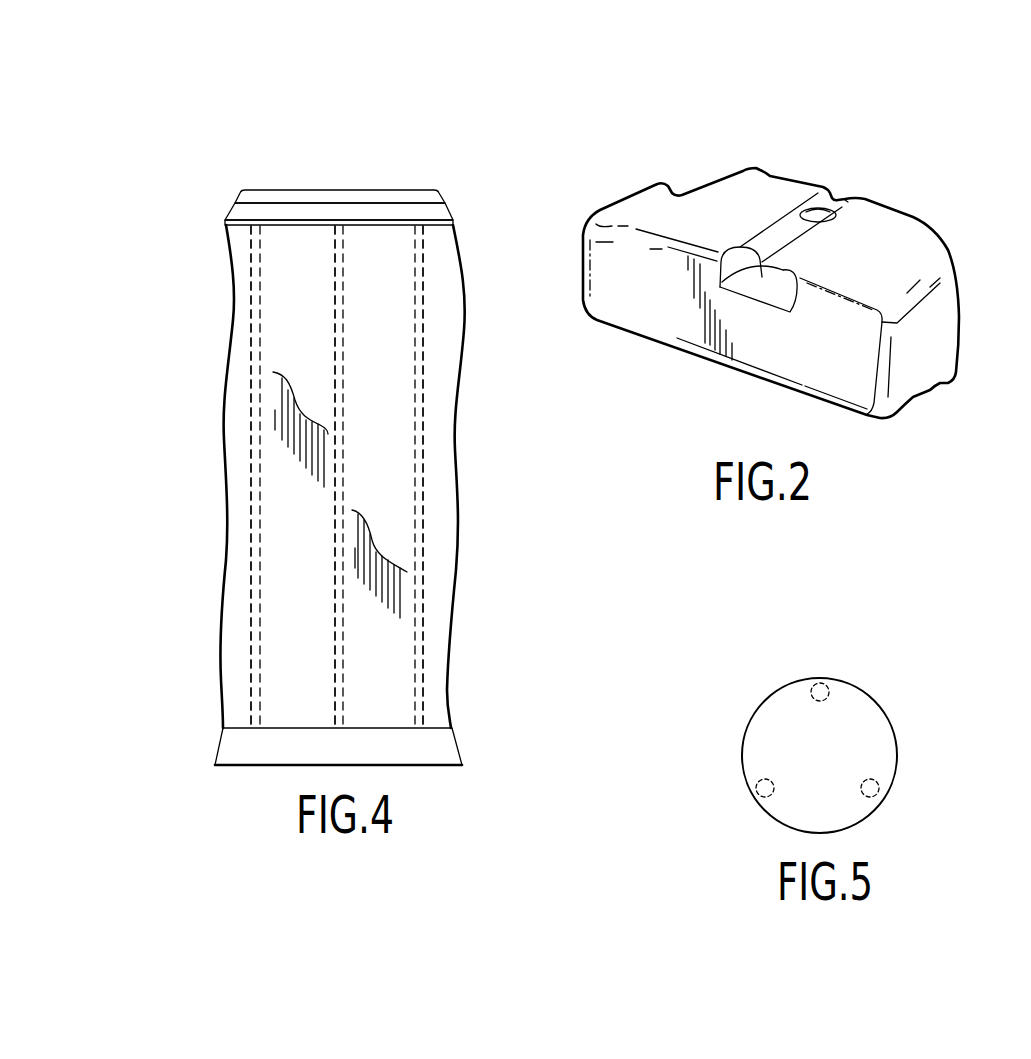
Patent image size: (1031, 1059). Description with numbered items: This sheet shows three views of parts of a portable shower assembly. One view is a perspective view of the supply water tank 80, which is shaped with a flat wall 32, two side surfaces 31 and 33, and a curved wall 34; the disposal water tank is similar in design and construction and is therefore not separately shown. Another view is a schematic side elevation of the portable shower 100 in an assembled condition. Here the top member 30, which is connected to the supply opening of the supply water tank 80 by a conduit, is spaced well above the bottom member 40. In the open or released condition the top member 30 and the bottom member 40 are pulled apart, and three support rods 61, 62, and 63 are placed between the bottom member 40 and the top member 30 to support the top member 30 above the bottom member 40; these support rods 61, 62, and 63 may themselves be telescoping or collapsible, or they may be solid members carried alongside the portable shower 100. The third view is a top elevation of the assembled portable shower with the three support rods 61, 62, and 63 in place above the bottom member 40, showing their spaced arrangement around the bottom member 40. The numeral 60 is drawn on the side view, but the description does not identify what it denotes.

In FIG. 4, the portable shower 100 is at (336, 419).
In FIG. 4, the top member 30 is at (243, 210).
In FIG. 4, the battery cell / housing body 60 is at (395, 473).
In FIG. 4, the support rod 61 is at (250, 573).
In FIG. 5, the support rod 61 is at (823, 688).
In FIG. 4, the support rod 62 is at (341, 637).
In FIG. 5, the support rod 62 is at (758, 783).
In FIG. 4, the support rod 63 is at (420, 638).
In FIG. 5, the support rod 63 is at (880, 783).
In FIG. 4, the bottom member 40 is at (437, 748).
In FIG. 5, the bottom member 40 is at (827, 726).
In FIG. 2, the supply water tank 80 is at (798, 314).
In FIG. 2, the side surface 31 is at (890, 243).
In FIG. 2, the flat wall 32 is at (668, 312).
In FIG. 2, the side surface 33 is at (843, 408).
In FIG. 2, the curved wall 34 is at (937, 342).